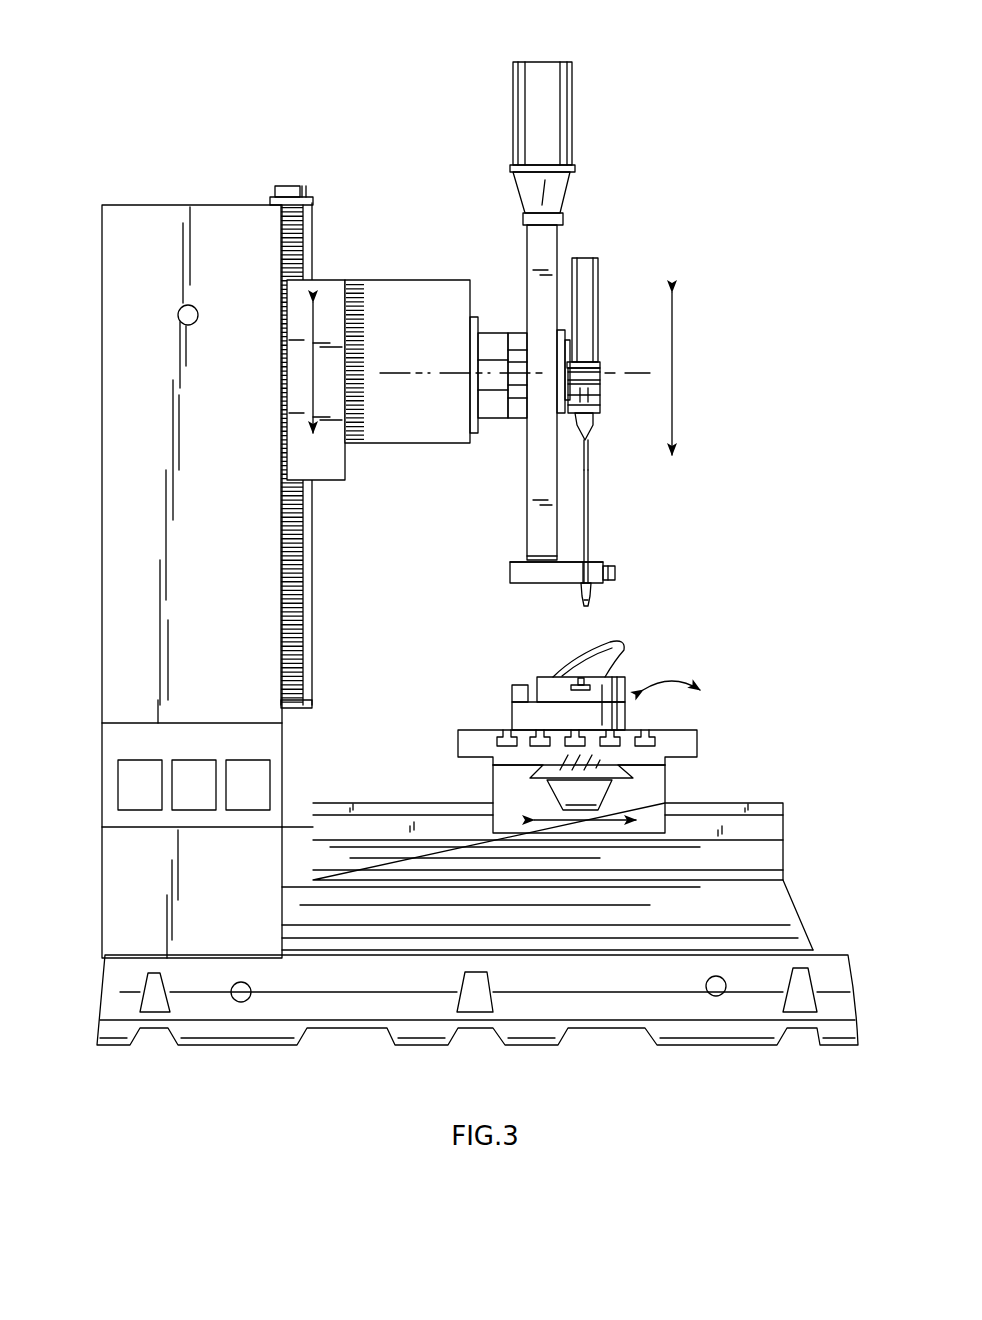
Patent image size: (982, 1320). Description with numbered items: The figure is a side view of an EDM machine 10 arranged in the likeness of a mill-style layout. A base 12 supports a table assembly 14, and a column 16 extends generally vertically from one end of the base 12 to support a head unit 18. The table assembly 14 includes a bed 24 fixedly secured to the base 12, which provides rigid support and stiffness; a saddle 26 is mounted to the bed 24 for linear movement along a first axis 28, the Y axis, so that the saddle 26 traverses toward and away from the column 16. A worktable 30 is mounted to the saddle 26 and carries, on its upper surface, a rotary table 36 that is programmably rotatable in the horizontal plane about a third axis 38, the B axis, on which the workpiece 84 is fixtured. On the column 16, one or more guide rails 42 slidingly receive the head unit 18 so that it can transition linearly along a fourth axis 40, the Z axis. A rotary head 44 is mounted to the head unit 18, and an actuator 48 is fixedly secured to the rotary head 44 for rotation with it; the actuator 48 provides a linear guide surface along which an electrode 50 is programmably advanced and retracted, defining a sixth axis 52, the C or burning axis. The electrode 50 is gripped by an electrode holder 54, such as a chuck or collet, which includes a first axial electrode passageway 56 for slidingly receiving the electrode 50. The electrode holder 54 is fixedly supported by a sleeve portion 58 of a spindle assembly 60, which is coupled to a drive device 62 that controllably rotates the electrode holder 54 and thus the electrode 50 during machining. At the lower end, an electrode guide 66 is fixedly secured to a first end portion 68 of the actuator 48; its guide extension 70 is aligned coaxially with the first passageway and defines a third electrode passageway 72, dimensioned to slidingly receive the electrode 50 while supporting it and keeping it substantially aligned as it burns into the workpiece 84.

The EDM machine 10 is at (170, 155).
The base 12 is at (538, 1034).
The table assembly 14 is at (828, 868).
The column 16 is at (102, 430).
The head unit 18 is at (407, 282).
The bed 24 is at (790, 915).
The saddle 26 is at (503, 784).
The first axis 28 is at (605, 815).
The worktable 30 is at (690, 746).
The rotary table 36 is at (520, 712).
The third axis 38 is at (692, 678).
The fourth axis 40 is at (287, 372).
The guide rails 42 is at (313, 232).
The rotary head 44 is at (498, 300).
The actuator 48 is at (557, 235).
The electrode 50 is at (590, 517).
The sixth axis 52 is at (673, 345).
The electrode holder 54 is at (598, 422).
The first axial electrode passageway 56 is at (591, 450).
The sleeve portion 58 is at (603, 396).
The spindle assembly 60 is at (614, 270).
The drive device 62 is at (590, 314).
The electrode guide 66 is at (603, 565).
The first end portion 68 is at (503, 553).
The guide extension 70 is at (592, 590).
The third electrode passageway 72 is at (585, 612).
The workpiece 84 is at (617, 646).